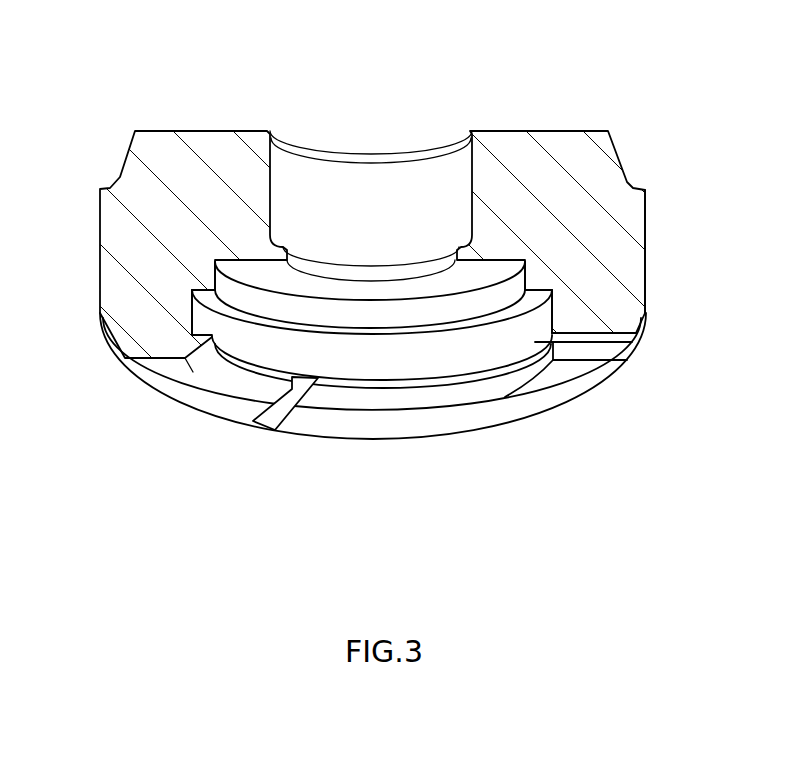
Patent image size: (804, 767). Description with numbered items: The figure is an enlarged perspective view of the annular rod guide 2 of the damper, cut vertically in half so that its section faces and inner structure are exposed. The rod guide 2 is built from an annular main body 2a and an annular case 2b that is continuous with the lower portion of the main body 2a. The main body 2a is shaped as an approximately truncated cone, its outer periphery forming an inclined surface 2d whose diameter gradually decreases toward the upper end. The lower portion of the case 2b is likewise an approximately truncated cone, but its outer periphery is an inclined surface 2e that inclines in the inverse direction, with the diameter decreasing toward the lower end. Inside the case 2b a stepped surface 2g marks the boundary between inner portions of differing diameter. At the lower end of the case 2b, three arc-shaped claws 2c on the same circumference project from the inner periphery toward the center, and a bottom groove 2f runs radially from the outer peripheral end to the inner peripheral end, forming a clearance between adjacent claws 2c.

The rod guide 2 is at (576, 112).
The main body 2a is at (610, 166).
The case 2b is at (630, 319).
The claw 2c is at (232, 383).
The inclined surface 2d is at (122, 169).
The inclined surface 2e is at (120, 362).
The bottom groove 2f is at (291, 412).
The stepped surface 2g is at (212, 296).